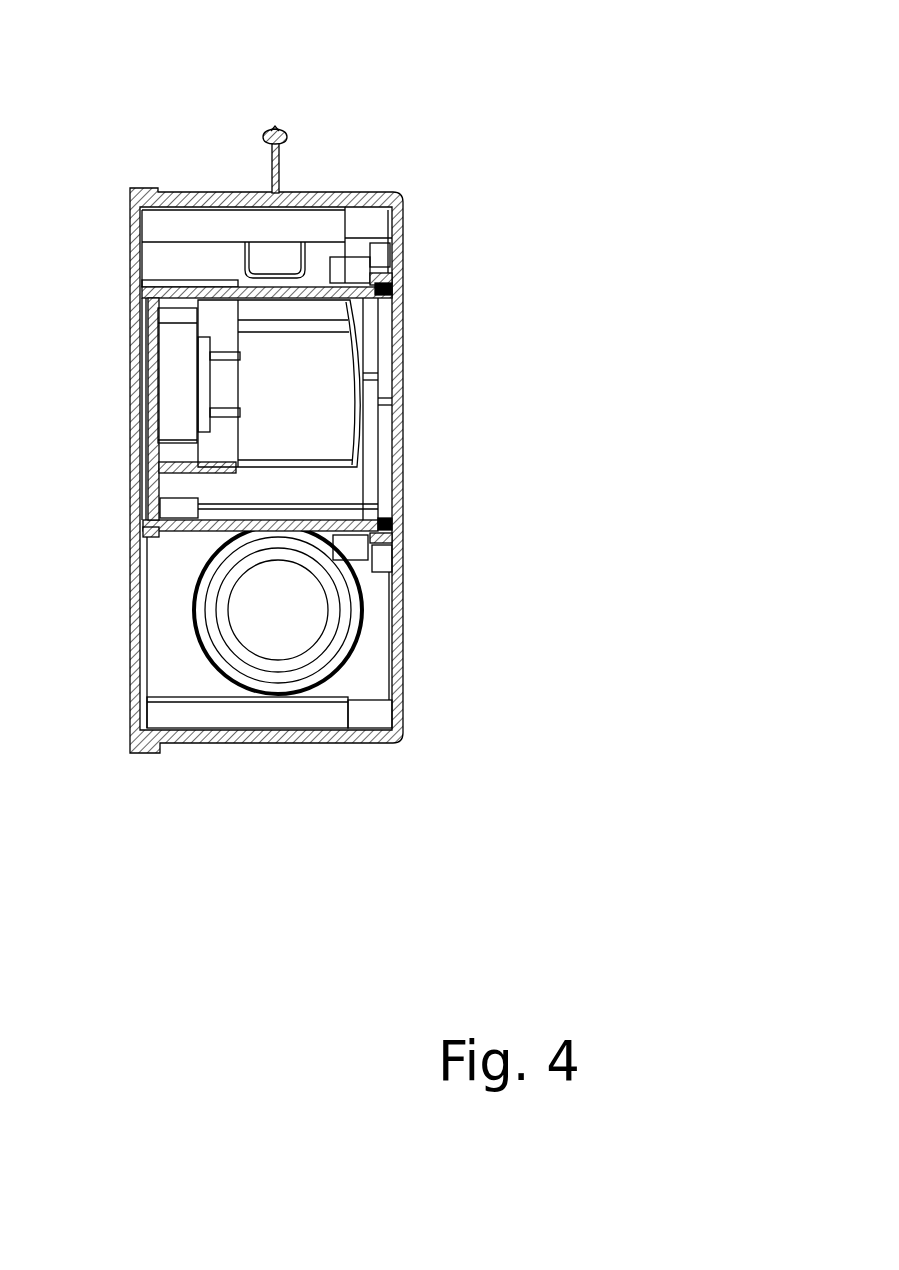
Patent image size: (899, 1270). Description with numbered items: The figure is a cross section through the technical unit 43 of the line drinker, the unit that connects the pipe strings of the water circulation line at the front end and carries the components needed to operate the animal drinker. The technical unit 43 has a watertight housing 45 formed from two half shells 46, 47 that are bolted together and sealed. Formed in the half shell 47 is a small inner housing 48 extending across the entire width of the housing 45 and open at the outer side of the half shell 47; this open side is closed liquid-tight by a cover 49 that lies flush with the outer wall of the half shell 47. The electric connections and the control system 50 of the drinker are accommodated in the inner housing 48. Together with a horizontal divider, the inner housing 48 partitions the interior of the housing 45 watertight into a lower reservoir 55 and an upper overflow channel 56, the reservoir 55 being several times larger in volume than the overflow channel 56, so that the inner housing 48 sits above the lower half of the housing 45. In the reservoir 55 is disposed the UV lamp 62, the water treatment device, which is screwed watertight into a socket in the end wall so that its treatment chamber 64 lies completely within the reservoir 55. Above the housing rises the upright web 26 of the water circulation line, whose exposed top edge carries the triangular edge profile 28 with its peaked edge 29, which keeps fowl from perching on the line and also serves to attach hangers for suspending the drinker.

The technical unit 43 is at (437, 107).
The peaked edge 29 is at (276, 130).
The edge profile 28 is at (282, 137).
The overflow channel 56 is at (197, 225).
The web 26 is at (280, 175).
The control system 50 is at (329, 396).
The housing 45 is at (400, 363).
The cover 49 is at (400, 430).
The inner housing 48 is at (318, 520).
The half shell 47 is at (403, 590).
The reservoir 55 is at (368, 672).
The half shell 46 is at (130, 607).
The UV lamp 62 is at (198, 652).
The treatment chamber 64 is at (282, 628).